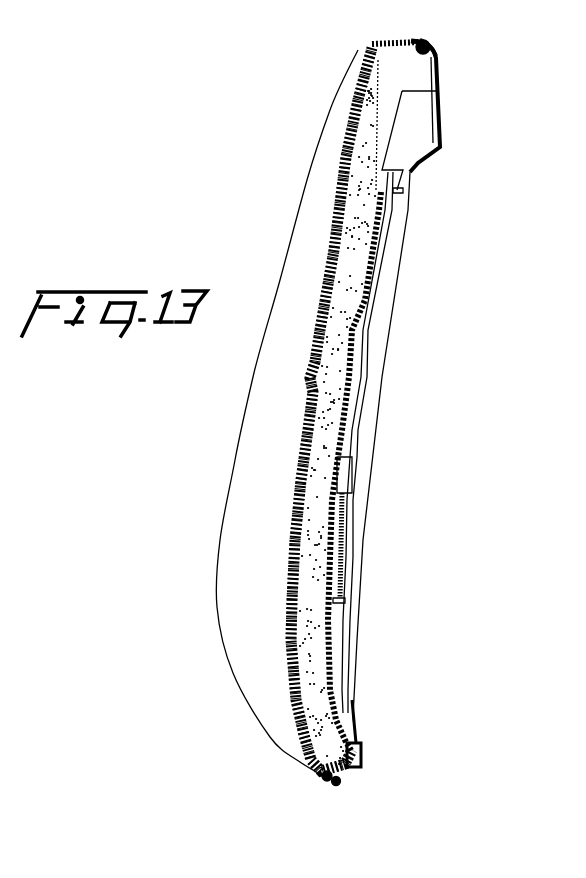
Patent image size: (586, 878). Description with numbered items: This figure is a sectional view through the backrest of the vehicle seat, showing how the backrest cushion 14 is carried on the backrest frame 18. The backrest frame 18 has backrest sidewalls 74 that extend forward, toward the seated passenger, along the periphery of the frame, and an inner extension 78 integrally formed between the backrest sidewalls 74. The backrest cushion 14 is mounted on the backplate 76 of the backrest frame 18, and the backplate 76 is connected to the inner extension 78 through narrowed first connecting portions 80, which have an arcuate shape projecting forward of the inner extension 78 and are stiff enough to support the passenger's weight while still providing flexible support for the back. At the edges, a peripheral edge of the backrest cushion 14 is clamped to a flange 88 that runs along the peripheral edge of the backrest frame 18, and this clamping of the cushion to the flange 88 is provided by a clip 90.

The backrest cushion 14 is at (337, 177).
The backrest frame 18 is at (383, 332).
The backrest sidewalls 74 is at (432, 52).
The backplate 76 is at (336, 456).
The inner extension 78 is at (370, 287).
The first connecting portions 80 is at (343, 548).
The flange 88 is at (407, 40).
The clip 90 is at (430, 41).